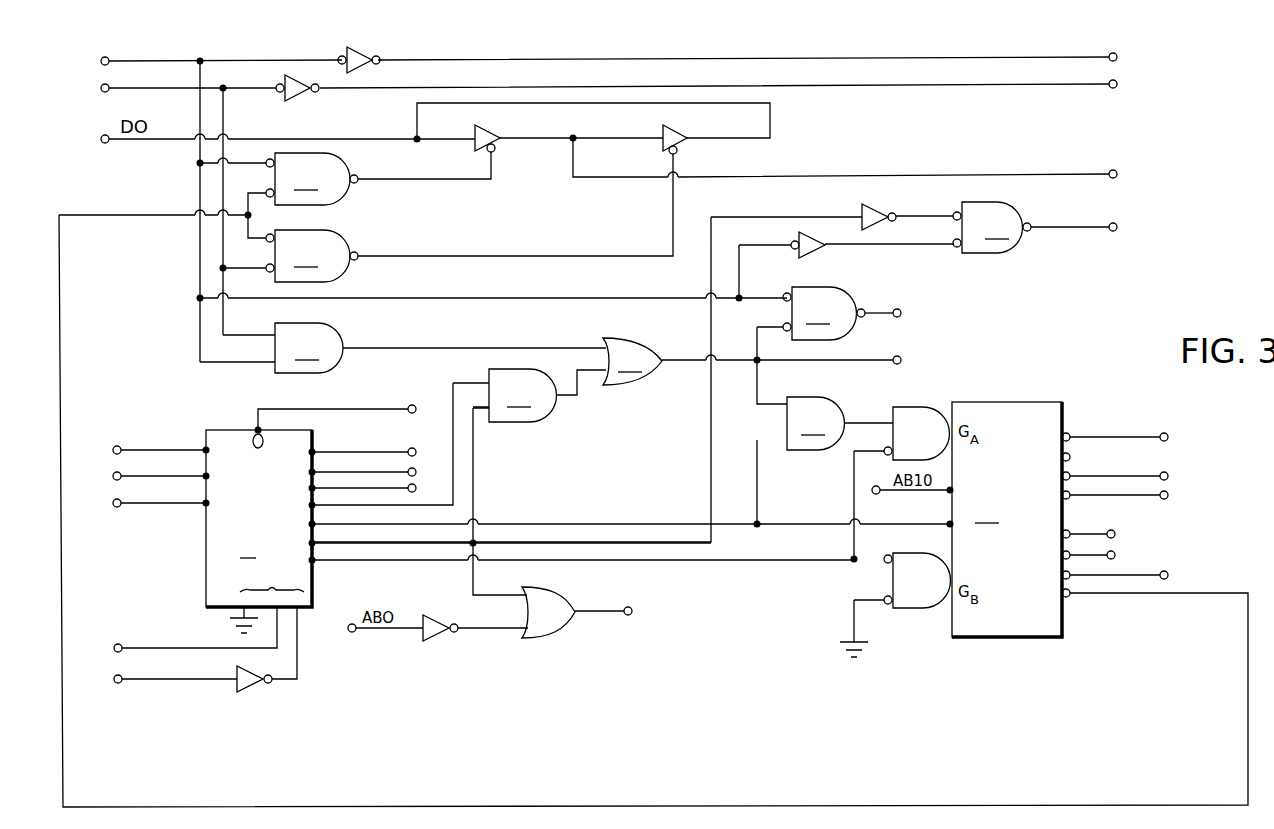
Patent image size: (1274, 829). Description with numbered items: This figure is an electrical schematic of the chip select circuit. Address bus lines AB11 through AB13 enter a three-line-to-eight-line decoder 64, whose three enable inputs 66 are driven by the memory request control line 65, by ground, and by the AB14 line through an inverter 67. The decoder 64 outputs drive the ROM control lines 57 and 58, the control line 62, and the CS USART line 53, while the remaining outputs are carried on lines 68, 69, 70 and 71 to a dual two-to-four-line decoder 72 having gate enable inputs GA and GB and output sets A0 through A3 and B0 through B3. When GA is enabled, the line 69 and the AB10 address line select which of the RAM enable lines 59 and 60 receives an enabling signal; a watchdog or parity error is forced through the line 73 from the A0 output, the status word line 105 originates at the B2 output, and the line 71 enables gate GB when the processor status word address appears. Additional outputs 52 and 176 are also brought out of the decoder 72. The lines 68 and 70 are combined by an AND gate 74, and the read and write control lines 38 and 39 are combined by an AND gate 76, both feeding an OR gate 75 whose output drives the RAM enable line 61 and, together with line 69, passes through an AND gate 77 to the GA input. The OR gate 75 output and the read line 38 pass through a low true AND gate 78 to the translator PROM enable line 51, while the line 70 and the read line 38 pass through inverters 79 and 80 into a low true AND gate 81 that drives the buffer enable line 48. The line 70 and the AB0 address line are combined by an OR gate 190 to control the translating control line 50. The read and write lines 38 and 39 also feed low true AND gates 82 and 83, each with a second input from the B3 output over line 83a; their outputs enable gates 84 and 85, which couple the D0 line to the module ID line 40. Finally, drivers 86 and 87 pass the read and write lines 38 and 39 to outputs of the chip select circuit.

The read control line 38 is at (250, 60).
The write control line 39 is at (247, 90).
The module ID line 40 is at (1012, 172).
The buffer enable line 48 is at (1113, 232).
The translating control line 50 is at (628, 606).
The translator PROM enable line 51 is at (903, 313).
The output line 52 is at (1115, 530).
The CS USART line 53 is at (414, 485).
The control line 57 is at (412, 404).
The control line 58 is at (412, 448).
The RAM enable line 59 is at (1164, 471).
The RAM enable line 60 is at (1168, 495).
The RAM enable line 61 is at (903, 360).
The control line 62 is at (414, 469).
The three-line-to-eight-line decoder 64 is at (214, 530).
The memory request (MREQ) control line 65 is at (112, 648).
The enable inputs 66 is at (272, 577).
The inverter 67 is at (250, 688).
The line 68 is at (446, 508).
The line 69 is at (382, 527).
The control line 70 is at (682, 545).
The line 71 is at (400, 565).
The dual two-to-four-line decoder 72 is at (1009, 519).
The line 73 is at (1164, 432).
The AND gate 74 is at (529, 395).
The OR gate 75 is at (748, 361).
The AND gate 76 is at (403, 348).
The AND gate 77 is at (840, 423).
The low true AND gate 78 is at (811, 323).
The inverter 79 is at (876, 210).
The inverter 80 is at (822, 252).
The low true AND gate 81 is at (992, 227).
The low true AND gate 82 is at (278, 195).
The low true AND gate 83 is at (289, 256).
The line 83a is at (118, 213).
The gate 84 is at (488, 132).
The gate 85 is at (675, 132).
The driver 86 is at (318, 93).
The driver 87 is at (360, 48).
The status word line 105 is at (1168, 575).
The output line 176 is at (1115, 554).
The OR gate 190 is at (535, 632).